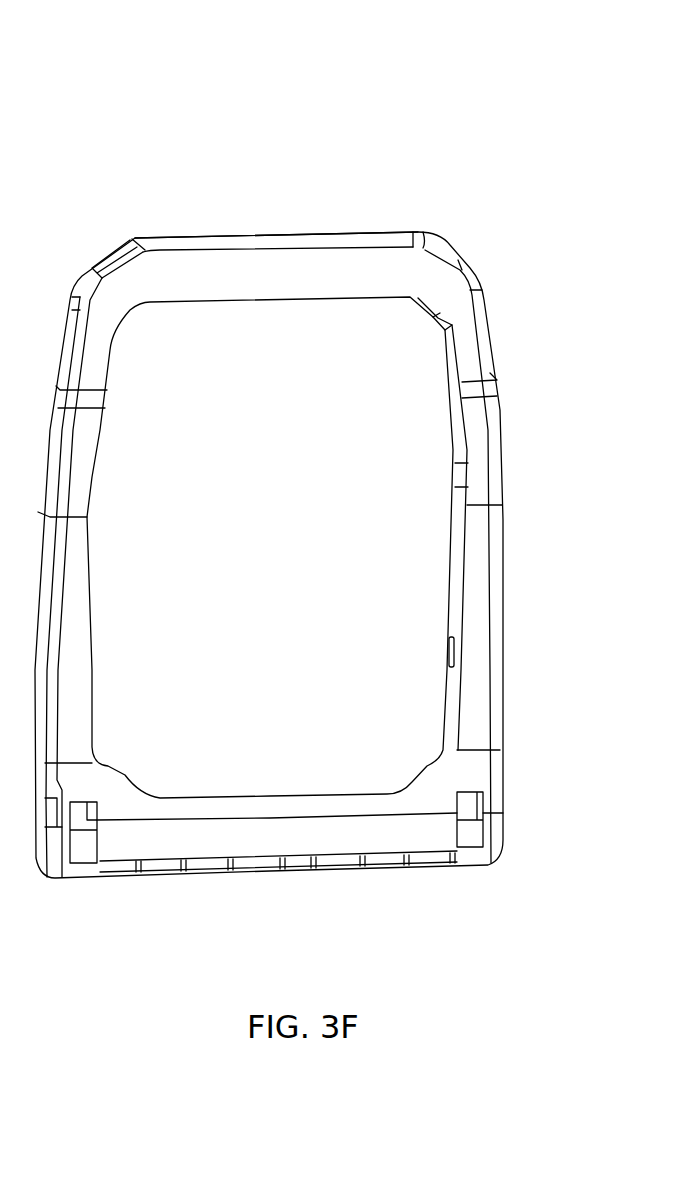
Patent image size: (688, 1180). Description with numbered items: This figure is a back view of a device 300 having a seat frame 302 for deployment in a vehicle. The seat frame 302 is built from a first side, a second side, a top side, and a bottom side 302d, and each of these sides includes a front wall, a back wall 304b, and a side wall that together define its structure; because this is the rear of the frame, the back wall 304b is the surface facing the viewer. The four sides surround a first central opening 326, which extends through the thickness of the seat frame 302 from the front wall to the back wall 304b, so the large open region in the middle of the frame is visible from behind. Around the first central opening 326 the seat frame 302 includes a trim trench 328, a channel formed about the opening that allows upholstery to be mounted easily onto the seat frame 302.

The device 300 is at (244, 52).
The seat frame 302 is at (283, 134).
The bottom side 302d is at (290, 838).
The back wall 304b is at (478, 548).
The first central opening 326 is at (292, 585).
The trim trench 328 is at (250, 248).